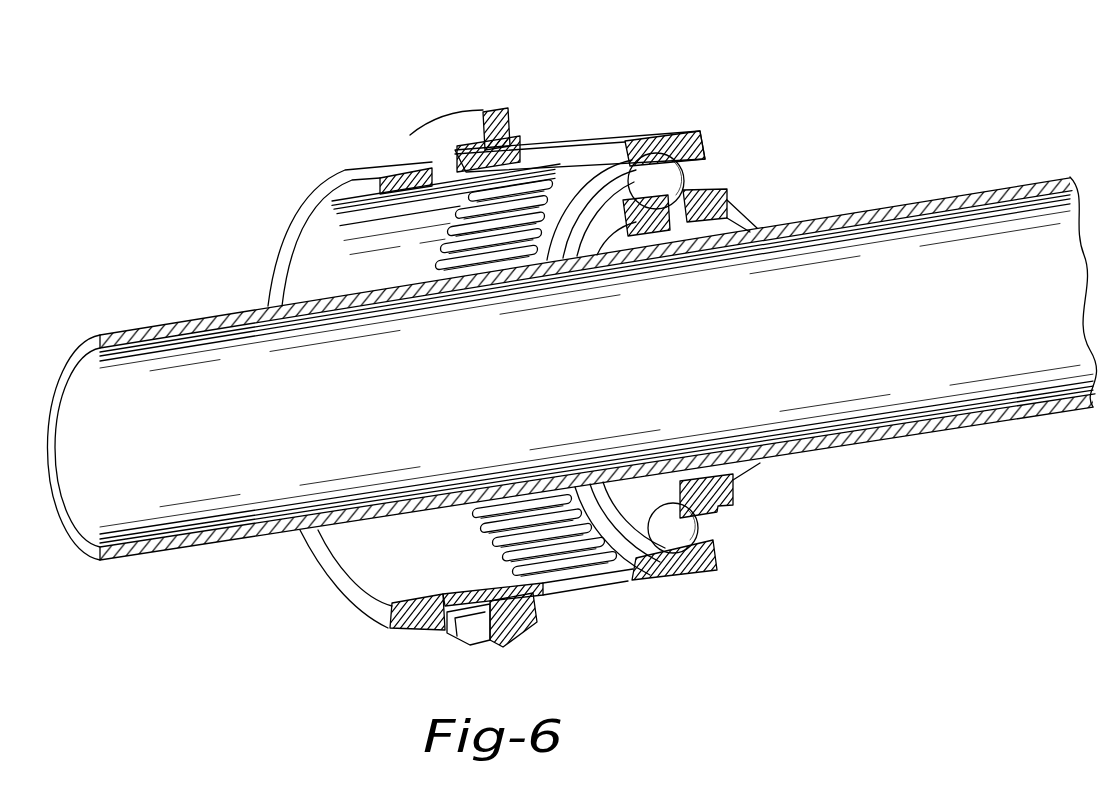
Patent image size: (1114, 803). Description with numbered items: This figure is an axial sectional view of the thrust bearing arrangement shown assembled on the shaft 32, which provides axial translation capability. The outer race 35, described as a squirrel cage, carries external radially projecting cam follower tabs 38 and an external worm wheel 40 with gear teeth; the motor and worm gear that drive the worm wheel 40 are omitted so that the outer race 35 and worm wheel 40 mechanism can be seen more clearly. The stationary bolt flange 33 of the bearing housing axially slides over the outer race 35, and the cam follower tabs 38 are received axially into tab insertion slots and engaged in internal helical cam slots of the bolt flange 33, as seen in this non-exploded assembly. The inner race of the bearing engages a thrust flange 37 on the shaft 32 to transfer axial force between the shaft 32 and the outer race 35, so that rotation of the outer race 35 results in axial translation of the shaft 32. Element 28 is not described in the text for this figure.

The shaft 32 is at (120, 333).
The external worm wheel 40 is at (352, 190).
The cam follower tabs 38 is at (432, 147).
The bolt flange 33 is at (481, 115).
The outer race 35 is at (643, 142).
The ball 28 is at (677, 181).
The thrust flange 37 is at (750, 215).